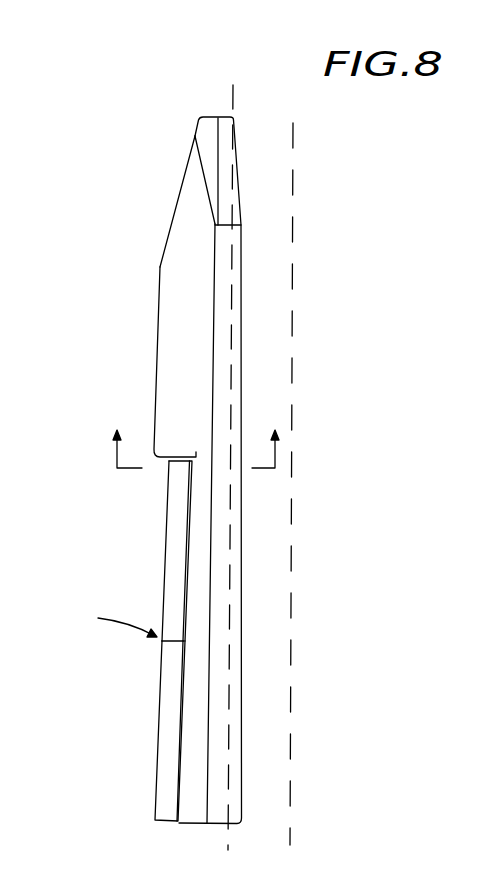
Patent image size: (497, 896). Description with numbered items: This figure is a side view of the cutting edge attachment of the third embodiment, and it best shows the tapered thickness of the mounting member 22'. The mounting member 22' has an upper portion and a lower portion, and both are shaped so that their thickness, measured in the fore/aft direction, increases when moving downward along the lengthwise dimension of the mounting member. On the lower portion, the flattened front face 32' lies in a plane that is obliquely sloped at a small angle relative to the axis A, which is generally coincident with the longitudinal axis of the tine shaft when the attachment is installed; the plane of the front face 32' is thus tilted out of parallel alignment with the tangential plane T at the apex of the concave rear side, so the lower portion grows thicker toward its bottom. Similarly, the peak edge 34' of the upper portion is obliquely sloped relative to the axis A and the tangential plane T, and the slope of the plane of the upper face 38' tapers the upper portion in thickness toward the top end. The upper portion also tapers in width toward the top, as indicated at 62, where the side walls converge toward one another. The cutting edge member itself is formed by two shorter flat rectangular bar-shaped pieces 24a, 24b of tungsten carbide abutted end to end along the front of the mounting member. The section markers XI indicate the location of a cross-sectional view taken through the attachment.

The mounting member 22' is at (147, 471).
The width taper of upper portion 62 is at (204, 134).
The upper face 38' is at (165, 201).
The peak edge 34' is at (134, 345).
The flat rectangular bar-shaped piece 24a is at (177, 553).
The flattened front face 32' is at (128, 684).
The flat rectangular bar-shaped piece 24b is at (165, 783).
The tangential plane T is at (235, 93).
The axis A is at (297, 692).
The section line XI is at (195, 435).